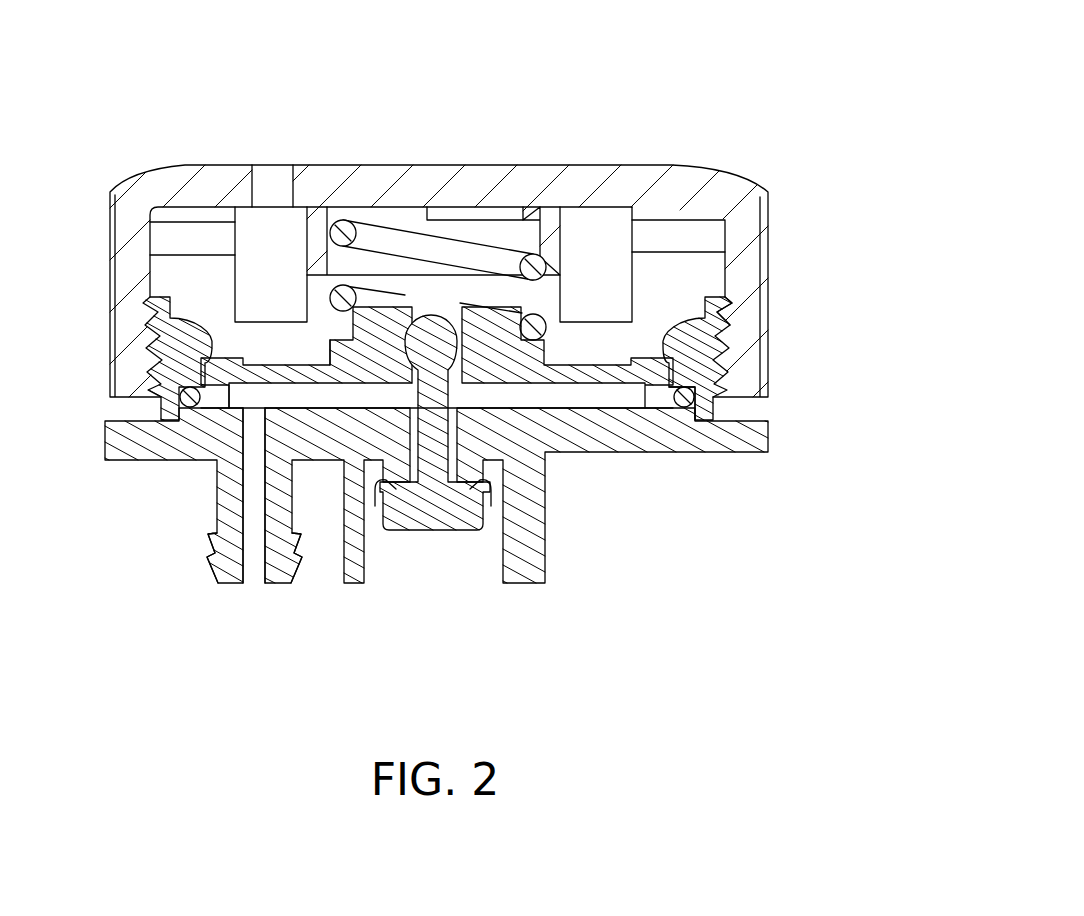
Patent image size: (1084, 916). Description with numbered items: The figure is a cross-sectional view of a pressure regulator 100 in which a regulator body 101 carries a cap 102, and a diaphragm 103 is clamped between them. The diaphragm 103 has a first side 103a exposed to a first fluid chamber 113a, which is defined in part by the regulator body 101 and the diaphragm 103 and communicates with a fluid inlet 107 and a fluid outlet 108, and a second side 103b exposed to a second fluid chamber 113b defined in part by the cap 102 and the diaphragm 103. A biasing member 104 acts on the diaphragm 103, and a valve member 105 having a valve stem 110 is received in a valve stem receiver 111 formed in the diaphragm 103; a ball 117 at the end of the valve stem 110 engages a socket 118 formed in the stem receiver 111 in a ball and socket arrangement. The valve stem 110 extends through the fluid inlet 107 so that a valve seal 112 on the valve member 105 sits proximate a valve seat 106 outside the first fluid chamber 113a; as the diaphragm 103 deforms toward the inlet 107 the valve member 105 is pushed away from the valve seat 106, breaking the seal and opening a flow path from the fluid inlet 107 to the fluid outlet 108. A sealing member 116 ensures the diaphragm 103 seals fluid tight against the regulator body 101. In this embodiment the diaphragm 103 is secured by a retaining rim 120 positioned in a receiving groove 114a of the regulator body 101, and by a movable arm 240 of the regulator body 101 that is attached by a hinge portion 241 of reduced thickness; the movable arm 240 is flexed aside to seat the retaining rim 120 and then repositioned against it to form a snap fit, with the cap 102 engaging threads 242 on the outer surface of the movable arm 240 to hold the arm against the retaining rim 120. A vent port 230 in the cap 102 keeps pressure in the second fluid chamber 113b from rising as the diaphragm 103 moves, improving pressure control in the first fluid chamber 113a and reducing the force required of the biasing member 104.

The pressure regulator 100 is at (692, 105).
The regulator body 101 is at (697, 442).
The cap 102 is at (734, 183).
The diaphragm 103 is at (330, 370).
The first side 103a is at (604, 383).
The second side 103b is at (268, 356).
The biasing member 104 is at (340, 222).
The valve member 105 is at (452, 510).
The valve seat 106 is at (380, 484).
The fluid inlet 107 is at (368, 584).
The fluid outlet 108 is at (263, 580).
The valve stem 110 is at (447, 393).
The valve stem receiver 111 is at (460, 353).
The valve seal 112 is at (493, 484).
The first fluid chamber 113a is at (257, 400).
The second fluid chamber 113b is at (254, 218).
The receiving groove 114a is at (673, 413).
The sealing member 116 is at (162, 405).
The ball 117 is at (418, 322).
The socket 118 is at (436, 318).
The retaining rim 120 is at (686, 377).
The vent port 230 is at (278, 180).
The movable arm 240 is at (723, 312).
The hinge portion 241 is at (713, 357).
The threads 242 is at (150, 318).